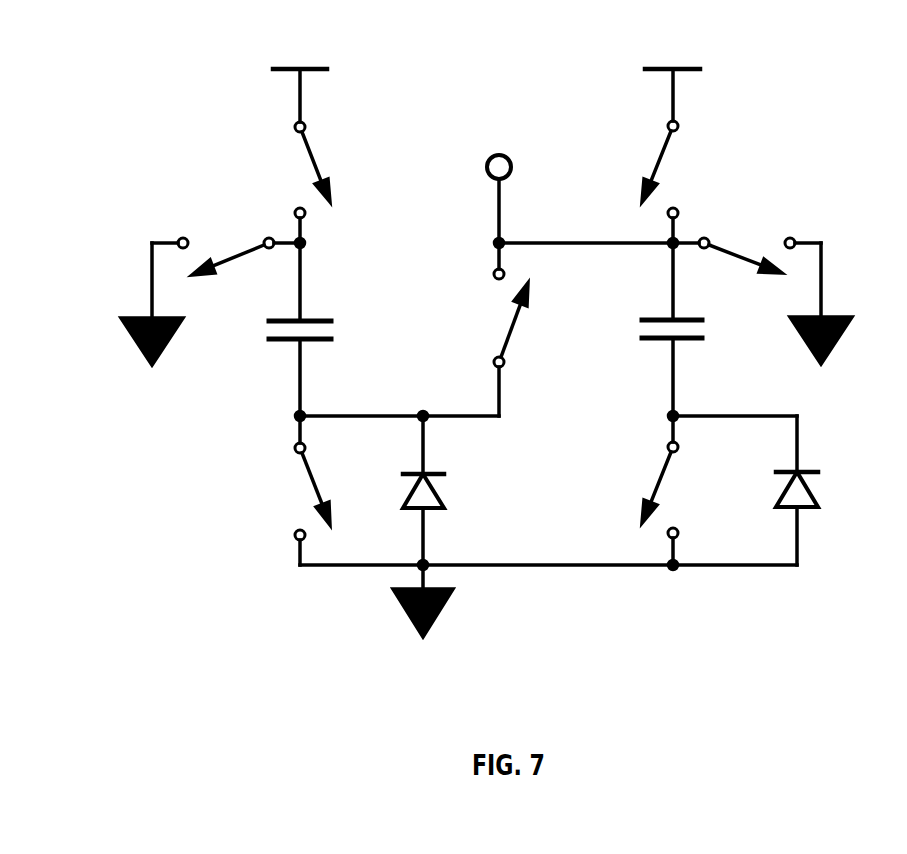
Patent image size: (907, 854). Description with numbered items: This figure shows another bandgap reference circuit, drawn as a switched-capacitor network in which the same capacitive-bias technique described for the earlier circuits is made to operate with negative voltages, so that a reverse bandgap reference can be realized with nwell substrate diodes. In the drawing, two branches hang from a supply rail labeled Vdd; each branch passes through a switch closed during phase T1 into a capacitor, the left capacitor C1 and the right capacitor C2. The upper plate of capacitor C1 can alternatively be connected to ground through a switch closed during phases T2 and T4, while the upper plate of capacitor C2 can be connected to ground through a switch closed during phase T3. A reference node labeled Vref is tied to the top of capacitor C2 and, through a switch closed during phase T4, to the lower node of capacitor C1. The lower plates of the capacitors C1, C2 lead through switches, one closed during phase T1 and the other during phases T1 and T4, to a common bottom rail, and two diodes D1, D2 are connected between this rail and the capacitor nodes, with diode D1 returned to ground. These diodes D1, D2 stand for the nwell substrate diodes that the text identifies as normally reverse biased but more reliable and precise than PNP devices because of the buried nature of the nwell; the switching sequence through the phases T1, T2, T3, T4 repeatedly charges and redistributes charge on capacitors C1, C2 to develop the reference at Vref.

The supply voltage Vdd is at (486, 75).
The reference voltage input Vref is at (487, 183).
The switches closed during phase T1 is at (486, 335).
The switch closed during phases T2 and T4 T2 is at (210, 278).
The switch closed during phase T3 is at (762, 273).
The switch closed during phase T4 is at (488, 331).
The first capacitor C1 is at (335, 332).
The second capacitor C2 is at (719, 332).
The first diode D1 is at (548, 525).
The second diode D2 is at (811, 490).